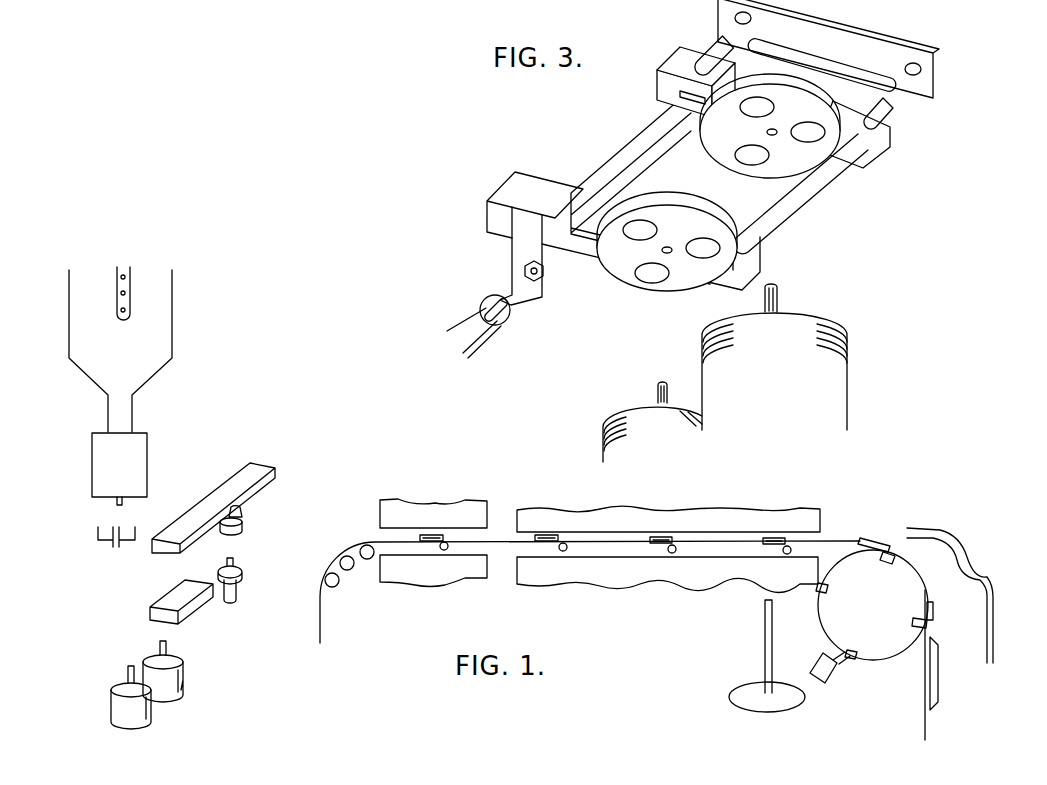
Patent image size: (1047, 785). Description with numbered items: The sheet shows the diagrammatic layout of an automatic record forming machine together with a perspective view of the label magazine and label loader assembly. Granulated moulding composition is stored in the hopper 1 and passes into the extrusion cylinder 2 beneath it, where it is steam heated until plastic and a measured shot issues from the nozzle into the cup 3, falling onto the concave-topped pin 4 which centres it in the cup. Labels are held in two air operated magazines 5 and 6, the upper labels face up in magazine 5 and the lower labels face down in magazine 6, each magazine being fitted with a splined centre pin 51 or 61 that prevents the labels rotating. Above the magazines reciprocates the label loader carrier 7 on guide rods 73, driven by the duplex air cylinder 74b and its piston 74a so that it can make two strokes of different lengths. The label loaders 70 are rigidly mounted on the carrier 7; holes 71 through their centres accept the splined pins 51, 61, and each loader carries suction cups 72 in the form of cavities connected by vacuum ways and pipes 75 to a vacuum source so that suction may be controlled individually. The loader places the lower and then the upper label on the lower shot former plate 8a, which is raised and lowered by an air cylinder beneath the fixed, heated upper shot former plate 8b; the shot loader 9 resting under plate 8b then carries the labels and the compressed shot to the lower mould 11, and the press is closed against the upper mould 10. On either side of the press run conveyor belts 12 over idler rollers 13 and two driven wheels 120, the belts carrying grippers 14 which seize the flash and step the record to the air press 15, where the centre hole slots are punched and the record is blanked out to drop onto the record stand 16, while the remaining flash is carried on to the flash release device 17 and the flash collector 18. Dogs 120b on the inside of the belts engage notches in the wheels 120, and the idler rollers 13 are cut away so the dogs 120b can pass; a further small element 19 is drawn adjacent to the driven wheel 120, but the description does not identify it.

In FIG. 1, the hopper 1 is at (173, 332).
In FIG. 1, the extrusion cylinder 2 is at (143, 455).
In FIG. 1, the cup 3 is at (96, 536).
In FIG. 1, the pin 4 is at (113, 545).
In FIG. 3, the label magazine 5 is at (781, 410).
In FIG. 1, the label magazine 5 is at (150, 717).
In FIG. 3, the label magazine 6 is at (613, 425).
In FIG. 1, the label magazine 6 is at (187, 675).
In FIG. 3, the label loader carrier 7 is at (893, 129).
In FIG. 1, the label loader carrier 7 is at (190, 600).
In FIG. 1, the lower shot former plate 8a is at (243, 572).
In FIG. 1, the upper shot former plate 8b is at (243, 509).
In FIG. 1, the shot loader 9 is at (243, 532).
In FIG. 1, the upper mould 10 is at (455, 510).
In FIG. 1, the lower mould 11 is at (467, 582).
In FIG. 1, the conveyor belts 12 is at (322, 620).
In FIG. 1, the idler rollers 13 is at (328, 573).
In FIG. 1, the grippers 14 is at (658, 545).
In FIG. 1, the air press 15 is at (728, 565).
In FIG. 1, the record stand 16 is at (765, 655).
In FIG. 1, the flash release device 17 is at (940, 680).
In FIG. 1, the flash collector 18 is at (993, 573).
In FIG. 1, the pick-up head 19 is at (827, 677).
In FIG. 3, the splined centre pin 51 is at (778, 292).
In FIG. 3, the splined centre pin 61 is at (657, 387).
In FIG. 3, the label loaders 70 is at (713, 232).
In FIG. 3, the holes 71 is at (777, 137).
In FIG. 3, the suction cups 72 is at (813, 133).
In FIG. 3, the guide rods 73 is at (607, 160).
In FIG. 3, the piston 74a is at (510, 304).
In FIG. 3, the air cylinder 74b is at (487, 343).
In FIG. 3, the pipes 75 is at (683, 97).
In FIG. 1, the driven wheels 120 is at (882, 653).
In FIG. 1, the dogs 120b is at (785, 554).